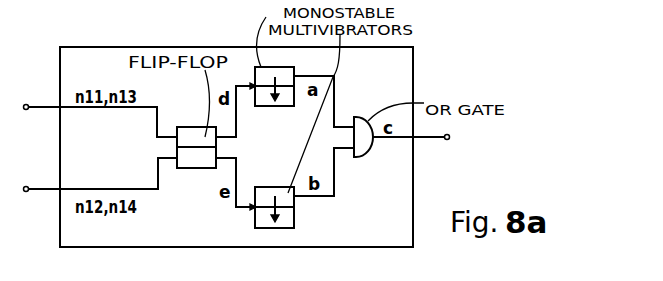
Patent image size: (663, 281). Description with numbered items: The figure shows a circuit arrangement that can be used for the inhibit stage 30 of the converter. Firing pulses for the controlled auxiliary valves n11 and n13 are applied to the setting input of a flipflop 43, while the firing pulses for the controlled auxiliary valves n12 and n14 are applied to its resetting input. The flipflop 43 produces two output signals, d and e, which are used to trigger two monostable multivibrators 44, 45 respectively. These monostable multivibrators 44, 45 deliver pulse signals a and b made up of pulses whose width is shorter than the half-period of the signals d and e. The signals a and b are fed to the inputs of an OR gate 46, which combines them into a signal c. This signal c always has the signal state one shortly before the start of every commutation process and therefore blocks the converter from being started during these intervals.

The inhibit stage 30 is at (413, 81).
The flipflop 43 is at (200, 125).
The monostable multivibrator 44 is at (283, 108).
The monostable multivibrator 45 is at (283, 184).
The OR gate 46 is at (361, 132).